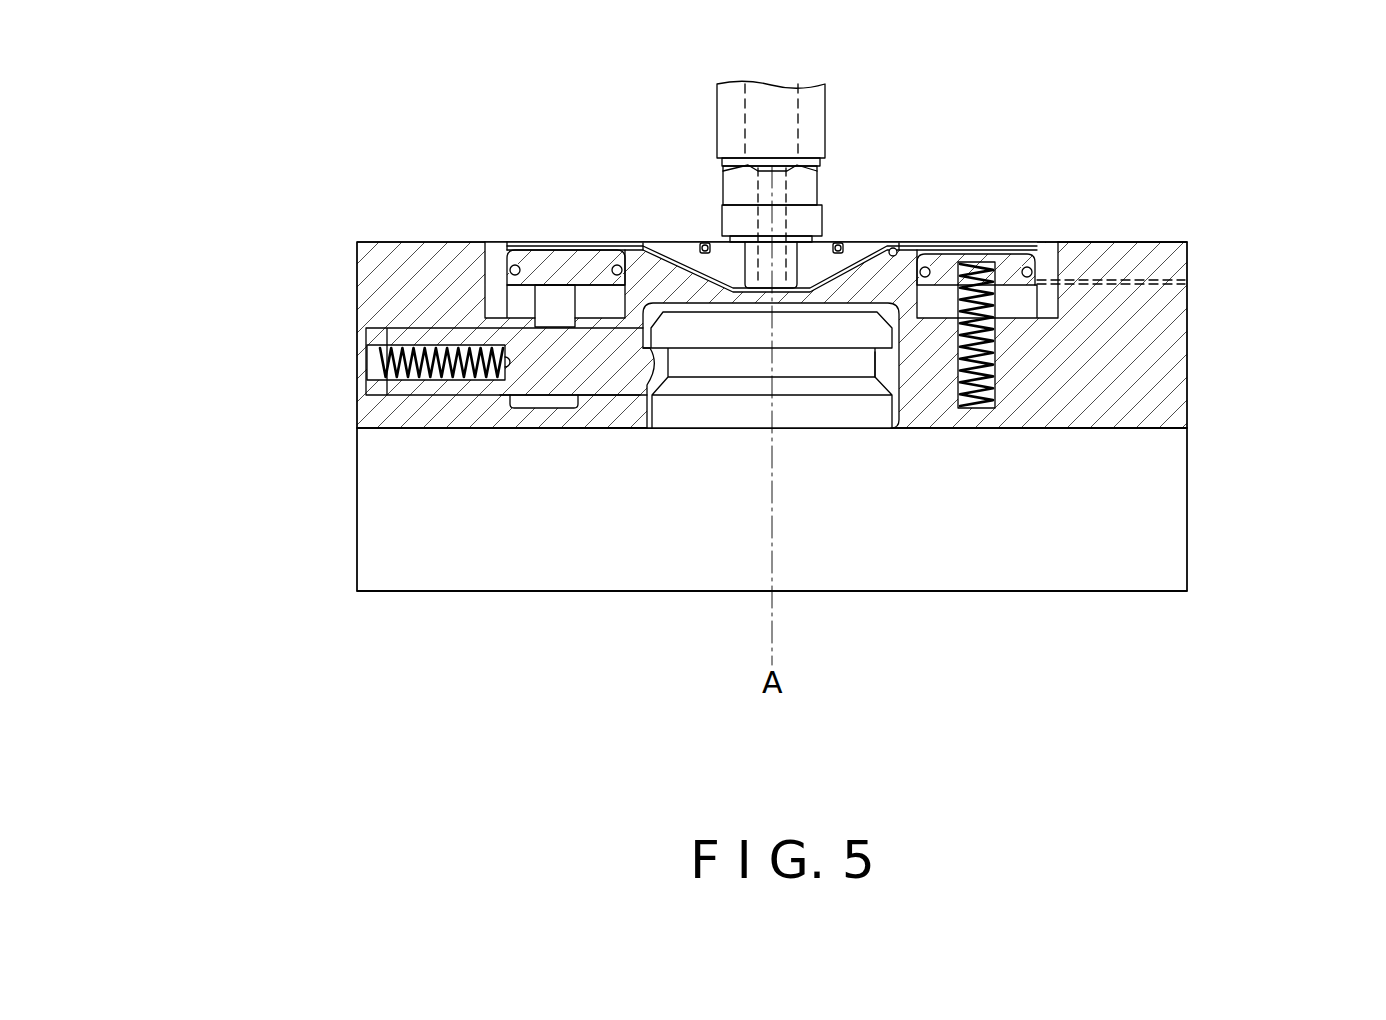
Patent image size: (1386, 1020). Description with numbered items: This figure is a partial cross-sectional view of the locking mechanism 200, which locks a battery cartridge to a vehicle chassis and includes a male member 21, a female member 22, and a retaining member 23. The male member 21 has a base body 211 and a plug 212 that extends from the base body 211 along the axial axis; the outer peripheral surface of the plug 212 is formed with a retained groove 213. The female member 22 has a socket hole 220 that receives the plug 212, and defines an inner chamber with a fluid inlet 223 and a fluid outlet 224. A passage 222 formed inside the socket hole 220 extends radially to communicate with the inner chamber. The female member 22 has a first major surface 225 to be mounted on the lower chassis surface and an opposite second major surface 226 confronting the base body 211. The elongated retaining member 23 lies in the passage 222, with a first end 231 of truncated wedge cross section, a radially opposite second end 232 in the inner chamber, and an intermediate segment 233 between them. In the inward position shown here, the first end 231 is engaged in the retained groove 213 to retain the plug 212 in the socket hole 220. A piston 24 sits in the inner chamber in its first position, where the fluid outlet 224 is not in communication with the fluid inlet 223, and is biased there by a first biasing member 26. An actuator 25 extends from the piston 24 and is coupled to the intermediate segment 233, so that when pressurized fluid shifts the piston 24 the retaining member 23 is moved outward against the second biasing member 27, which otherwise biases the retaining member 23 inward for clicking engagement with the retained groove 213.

The locking mechanism 200 is at (291, 136).
The male member 21 is at (1210, 532).
The base body 211 is at (1033, 535).
The female member 22 is at (1206, 328).
The passage 222 is at (613, 412).
The fluid inlet 223 is at (654, 248).
The fluid outlet 224 is at (1046, 243).
The first major surface 225 is at (1153, 243).
The second major surface 226 is at (1125, 430).
The retaining member 23 is at (475, 404).
The first end 231 is at (650, 300).
The second end 232 is at (412, 387).
The intermediate segment 233 is at (568, 383).
The piston 24 is at (558, 265).
The actuator 25 is at (550, 315).
The first biasing member 26 is at (995, 353).
The second biasing member 27 is at (450, 405).
The plug 212 is at (728, 340).
The retained groove 213 is at (874, 364).
The socket hole 220 is at (890, 313).